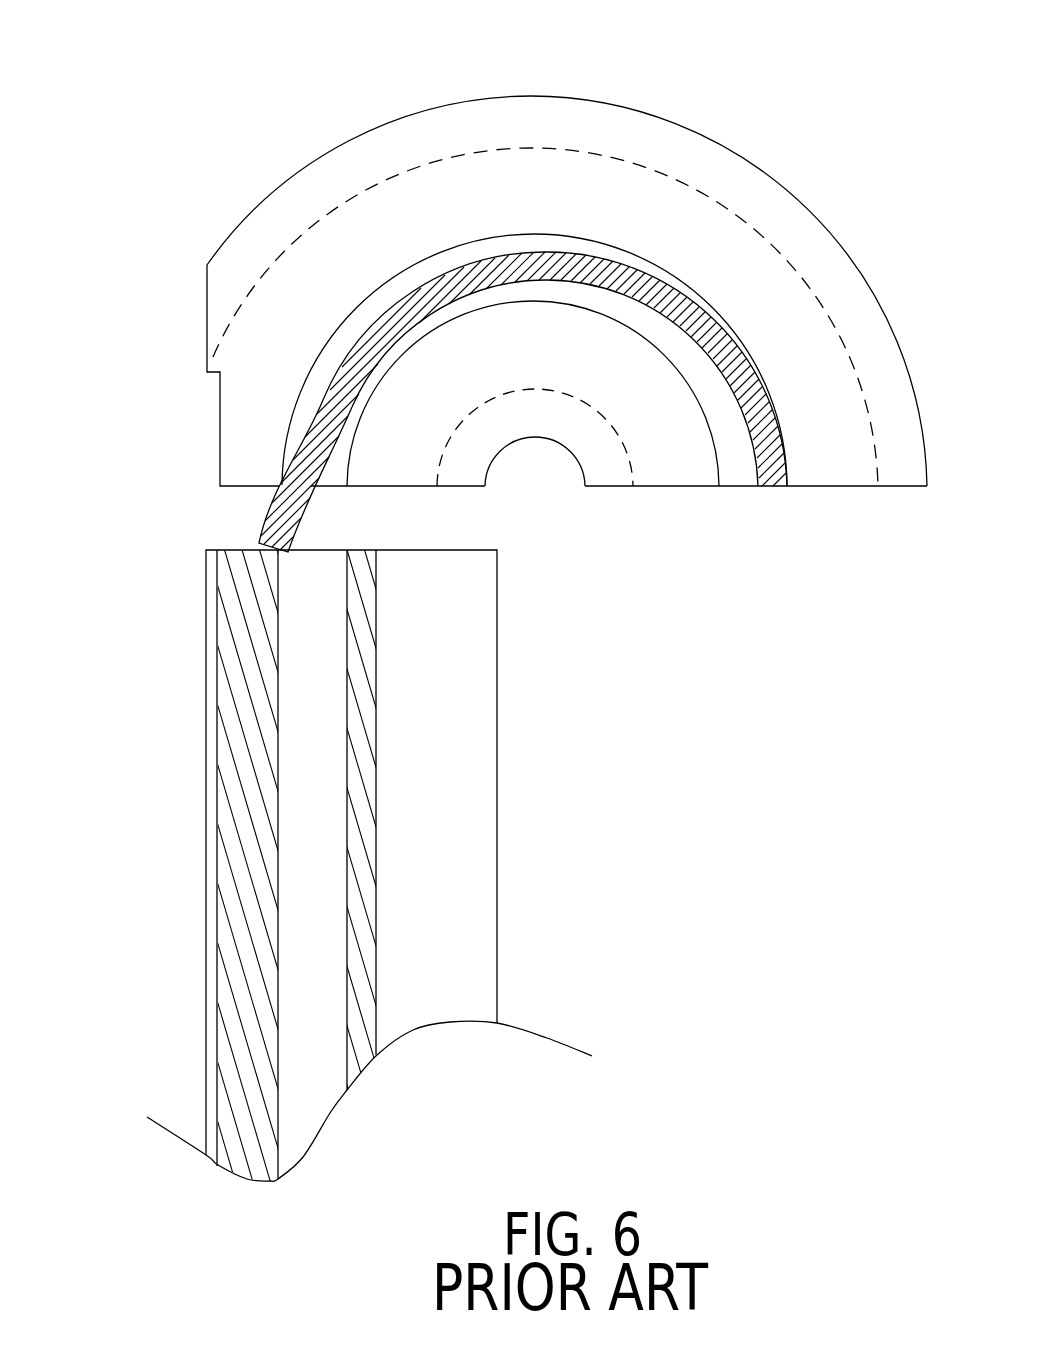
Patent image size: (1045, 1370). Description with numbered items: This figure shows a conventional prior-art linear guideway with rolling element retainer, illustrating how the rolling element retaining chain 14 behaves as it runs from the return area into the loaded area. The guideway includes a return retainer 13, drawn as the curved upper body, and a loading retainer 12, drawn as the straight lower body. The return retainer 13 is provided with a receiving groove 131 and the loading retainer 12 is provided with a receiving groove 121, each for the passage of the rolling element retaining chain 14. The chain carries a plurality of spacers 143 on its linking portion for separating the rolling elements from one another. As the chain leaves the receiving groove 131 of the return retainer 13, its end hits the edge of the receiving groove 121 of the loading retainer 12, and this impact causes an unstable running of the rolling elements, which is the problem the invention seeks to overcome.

The loading retainer 12 is at (240, 862).
The receiving groove 121 is at (310, 708).
The return retainer 13 is at (570, 133).
The receiving groove 131 is at (337, 460).
The rolling element retaining chain 14 is at (588, 262).
The spacer 143 is at (272, 541).